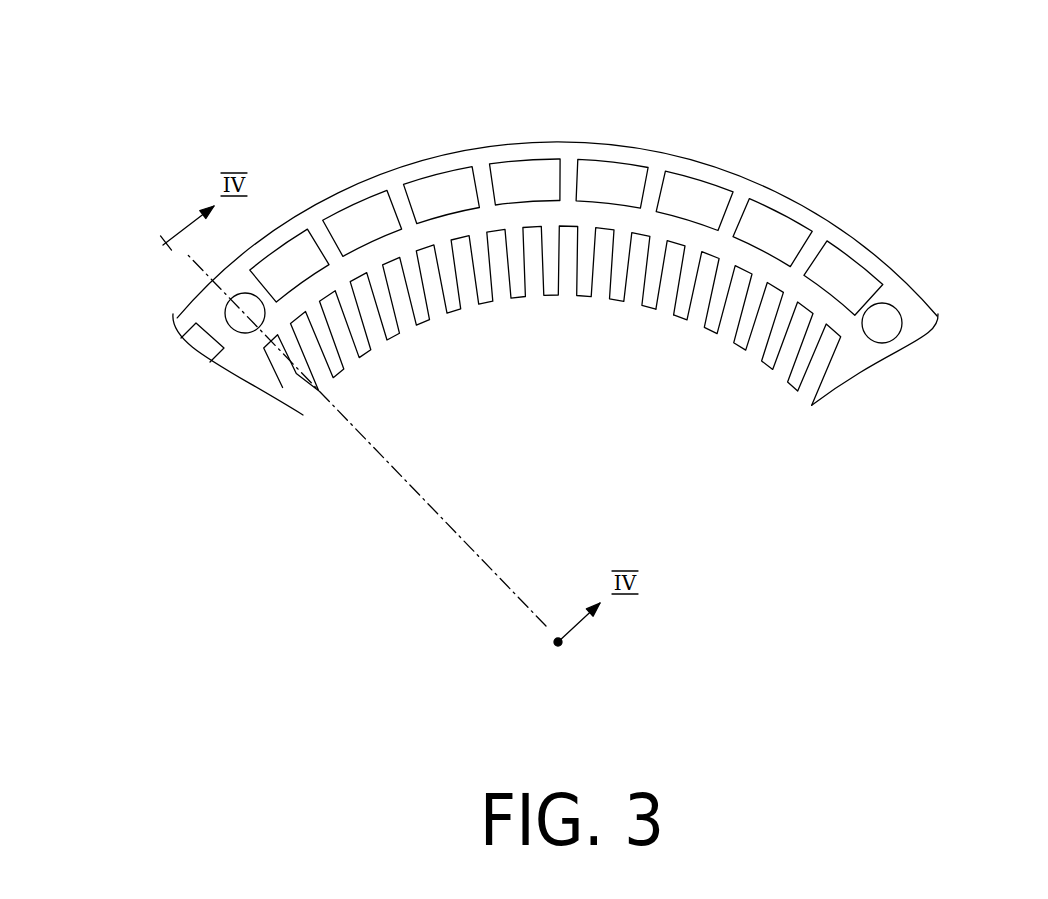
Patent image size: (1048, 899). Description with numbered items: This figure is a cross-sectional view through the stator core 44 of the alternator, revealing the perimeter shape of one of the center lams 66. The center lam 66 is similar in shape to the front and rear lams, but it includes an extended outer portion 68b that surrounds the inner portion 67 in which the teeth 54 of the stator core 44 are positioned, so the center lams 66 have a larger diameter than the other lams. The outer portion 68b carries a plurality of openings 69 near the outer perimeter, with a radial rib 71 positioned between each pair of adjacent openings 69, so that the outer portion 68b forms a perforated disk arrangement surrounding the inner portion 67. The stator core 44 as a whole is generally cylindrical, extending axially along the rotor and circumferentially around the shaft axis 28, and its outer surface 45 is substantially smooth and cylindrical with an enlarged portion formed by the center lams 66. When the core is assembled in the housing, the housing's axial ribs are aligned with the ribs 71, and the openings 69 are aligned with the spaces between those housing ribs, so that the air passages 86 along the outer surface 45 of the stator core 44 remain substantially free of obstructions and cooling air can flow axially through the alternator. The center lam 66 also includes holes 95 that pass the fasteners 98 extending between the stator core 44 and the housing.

The shaft axis 28 is at (553, 650).
The stator core 44 is at (505, 215).
The outer surface 45 is at (543, 258).
The teeth 54 is at (517, 295).
The center lams 66 is at (563, 155).
The inner portion 67 is at (645, 295).
The outer portion 68b is at (655, 177).
The openings 69 is at (447, 187).
The radial ribs 71 is at (400, 200).
The air passages 86 is at (372, 217).
The holes 95 is at (246, 343).
The fasteners 98 is at (252, 322).